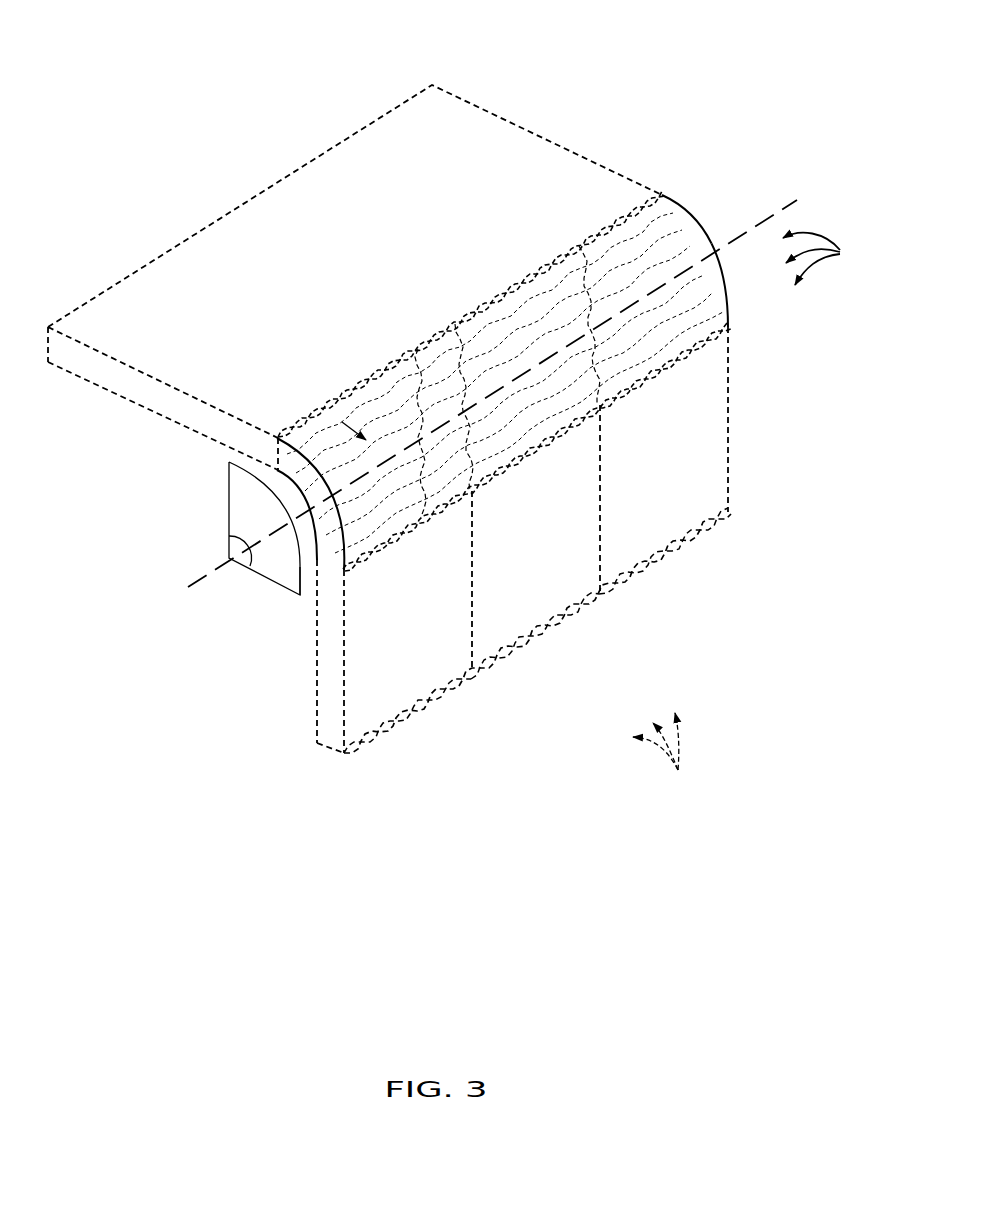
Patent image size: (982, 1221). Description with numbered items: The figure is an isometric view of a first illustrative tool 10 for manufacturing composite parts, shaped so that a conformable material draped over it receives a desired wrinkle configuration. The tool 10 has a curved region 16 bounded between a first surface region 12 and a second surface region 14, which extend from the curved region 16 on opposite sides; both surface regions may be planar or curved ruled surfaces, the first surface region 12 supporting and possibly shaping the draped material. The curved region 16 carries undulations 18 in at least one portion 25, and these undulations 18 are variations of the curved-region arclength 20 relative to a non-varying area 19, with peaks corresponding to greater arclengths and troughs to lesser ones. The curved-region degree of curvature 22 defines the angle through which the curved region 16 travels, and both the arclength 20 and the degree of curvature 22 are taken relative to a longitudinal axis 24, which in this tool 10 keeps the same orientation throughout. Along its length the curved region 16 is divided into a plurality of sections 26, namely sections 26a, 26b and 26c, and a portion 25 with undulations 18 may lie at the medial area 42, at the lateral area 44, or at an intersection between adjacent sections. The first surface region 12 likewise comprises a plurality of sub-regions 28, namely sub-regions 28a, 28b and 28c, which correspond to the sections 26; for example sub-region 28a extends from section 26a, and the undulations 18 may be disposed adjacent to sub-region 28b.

The tool 10 is at (745, 55).
The first surface region 12 is at (729, 424).
The second surface region 14 is at (540, 135).
The curved region 16 is at (708, 238).
The undulations 18 is at (487, 303).
The non-varying area 19 is at (320, 413).
The curved-region arclength 20 is at (298, 572).
The curved-region degree of curvature 22 is at (246, 557).
The longitudinal axis 24 is at (272, 532).
The portion 25 is at (830, 259).
The plurality of sections 26 is at (795, 372).
The first section 26a is at (415, 538).
The second section 26b is at (545, 457).
The third section 26c is at (675, 377).
The plurality of sub-regions 28 is at (662, 758).
The first sub-region 28a is at (413, 672).
The second sub-region 28b is at (547, 593).
The third sub-region 28c is at (670, 513).
The medial area 42 is at (527, 323).
The lateral area 44 is at (690, 210).